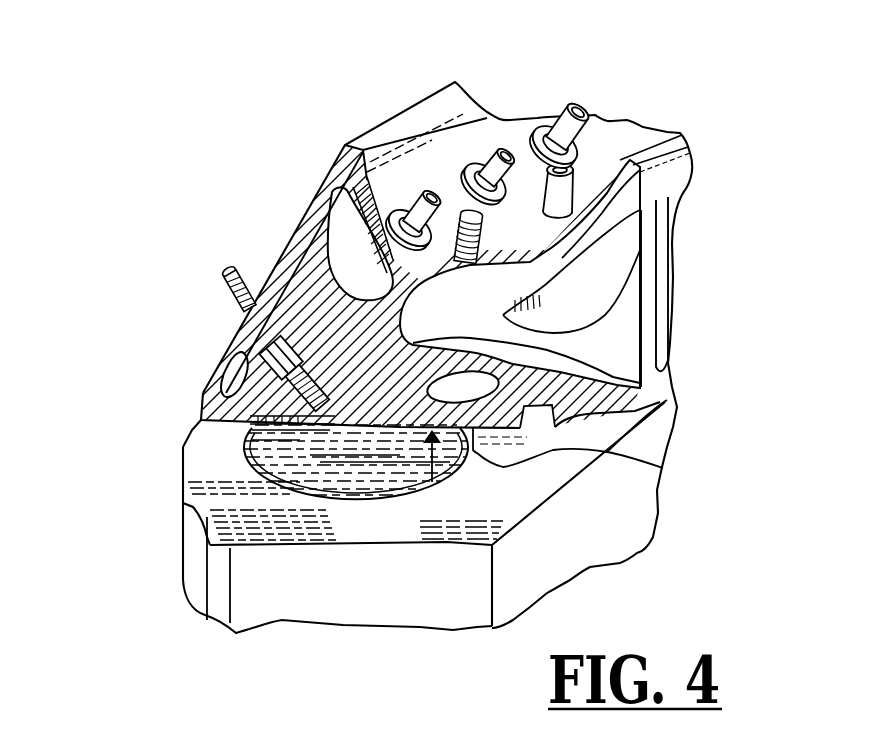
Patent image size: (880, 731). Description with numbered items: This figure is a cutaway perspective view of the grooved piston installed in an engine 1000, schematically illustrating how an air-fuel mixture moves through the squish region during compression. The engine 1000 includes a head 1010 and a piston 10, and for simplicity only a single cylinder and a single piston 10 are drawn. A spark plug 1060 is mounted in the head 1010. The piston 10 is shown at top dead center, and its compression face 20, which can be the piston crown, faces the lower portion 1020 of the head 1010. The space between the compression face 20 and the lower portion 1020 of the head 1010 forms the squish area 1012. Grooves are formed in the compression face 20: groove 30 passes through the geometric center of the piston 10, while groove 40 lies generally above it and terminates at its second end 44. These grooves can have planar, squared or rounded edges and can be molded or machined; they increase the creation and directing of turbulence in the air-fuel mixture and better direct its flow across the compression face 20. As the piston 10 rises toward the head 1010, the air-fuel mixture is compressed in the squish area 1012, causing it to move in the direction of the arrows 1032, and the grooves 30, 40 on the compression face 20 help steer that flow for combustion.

The engine 1000 is at (642, 66).
The head 1010 is at (600, 303).
The lower portion of head 1020 is at (663, 467).
The spark plug 1060 is at (228, 270).
The straight groove 30 is at (225, 422).
The second end 44 is at (218, 446).
The compression face 20 is at (193, 508).
The straight groove 40 is at (345, 450).
The piston 10 is at (403, 447).
The squish area 1012 is at (417, 430).
The arrows 1032 is at (440, 717).